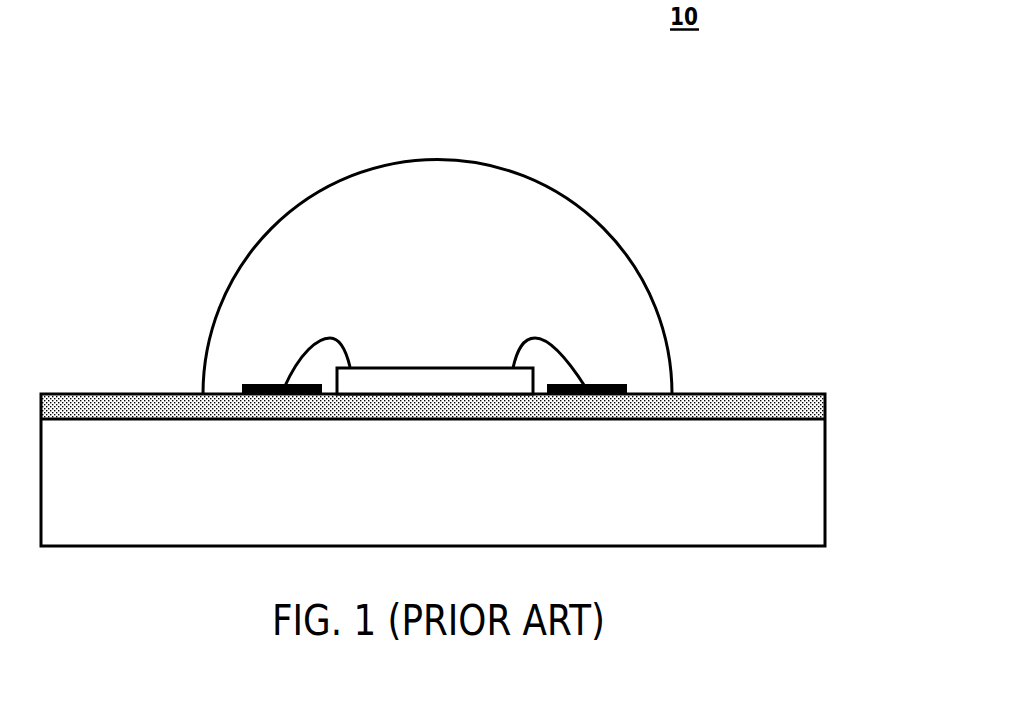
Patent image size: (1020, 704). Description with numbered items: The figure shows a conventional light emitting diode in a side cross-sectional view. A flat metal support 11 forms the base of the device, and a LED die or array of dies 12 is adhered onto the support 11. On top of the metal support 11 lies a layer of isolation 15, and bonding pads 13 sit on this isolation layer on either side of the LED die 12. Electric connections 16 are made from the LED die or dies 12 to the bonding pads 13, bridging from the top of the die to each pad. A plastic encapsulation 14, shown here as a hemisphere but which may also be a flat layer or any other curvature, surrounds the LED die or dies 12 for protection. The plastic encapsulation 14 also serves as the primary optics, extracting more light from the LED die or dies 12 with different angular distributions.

The support 11 is at (803, 502).
The LED die or array of dies 12 is at (441, 383).
The bonding pads 13 is at (262, 385).
The plastic encapsulation 14 is at (422, 198).
The layer of isolation 15 is at (736, 408).
The electric connections 16 is at (310, 353).